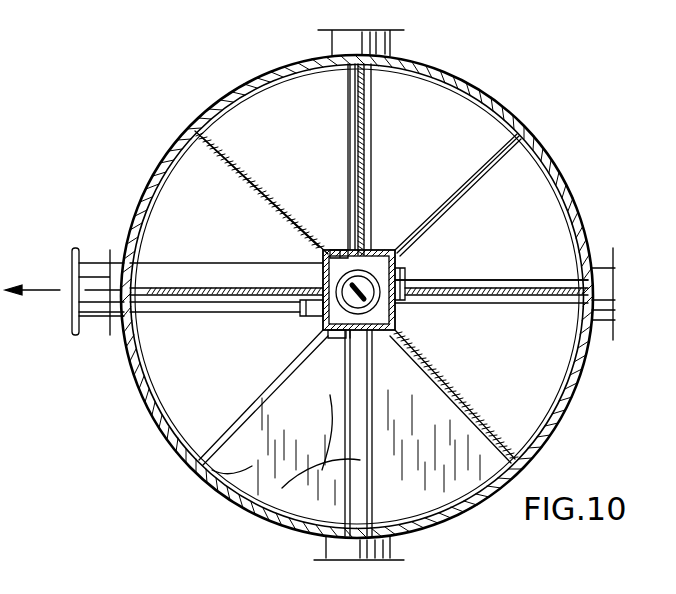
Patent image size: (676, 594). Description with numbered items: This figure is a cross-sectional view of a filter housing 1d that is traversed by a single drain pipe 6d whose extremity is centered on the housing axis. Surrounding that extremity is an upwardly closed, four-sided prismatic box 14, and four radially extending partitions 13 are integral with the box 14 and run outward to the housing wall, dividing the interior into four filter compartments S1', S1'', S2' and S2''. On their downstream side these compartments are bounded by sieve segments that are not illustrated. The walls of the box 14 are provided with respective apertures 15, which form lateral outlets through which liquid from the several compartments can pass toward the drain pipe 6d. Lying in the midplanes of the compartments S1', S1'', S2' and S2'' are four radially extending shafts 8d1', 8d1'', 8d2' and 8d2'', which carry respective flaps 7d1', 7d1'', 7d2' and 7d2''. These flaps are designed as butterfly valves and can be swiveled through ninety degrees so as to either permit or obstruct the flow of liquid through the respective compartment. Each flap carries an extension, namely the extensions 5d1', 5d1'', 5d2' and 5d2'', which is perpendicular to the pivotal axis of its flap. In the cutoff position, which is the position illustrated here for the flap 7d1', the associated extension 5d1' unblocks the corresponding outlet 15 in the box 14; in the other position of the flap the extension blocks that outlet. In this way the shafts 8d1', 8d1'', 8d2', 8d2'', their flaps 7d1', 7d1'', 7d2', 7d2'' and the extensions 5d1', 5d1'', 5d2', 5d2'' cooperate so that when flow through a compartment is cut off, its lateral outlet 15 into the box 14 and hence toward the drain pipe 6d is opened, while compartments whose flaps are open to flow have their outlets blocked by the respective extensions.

The filter housing 1d is at (535, 140).
The radially extending partitions 13 is at (496, 150).
The prismatic box 14 is at (382, 250).
The apertures 15 is at (395, 322).
The drain pipe 6d is at (93, 300).
The filter compartment S1' is at (398, 553).
The filter compartment S1'' is at (404, 37).
The filter compartment S2' is at (599, 237).
The filter compartment S2'' is at (80, 234).
The extension 5d1' is at (332, 433).
The extension 5d1'' is at (328, 219).
The extension 5d2' is at (434, 267).
The extension 5d2'' is at (286, 331).
The flap 7d1' is at (393, 159).
The flap 7d1'' is at (233, 424).
The flap 7d2' is at (491, 264).
The flap 7d2'' is at (226, 316).
The shaft 8d1' is at (286, 474).
The shaft 8d1'' is at (311, 157).
The shaft 8d2' is at (491, 317).
The shaft 8d2'' is at (261, 206).